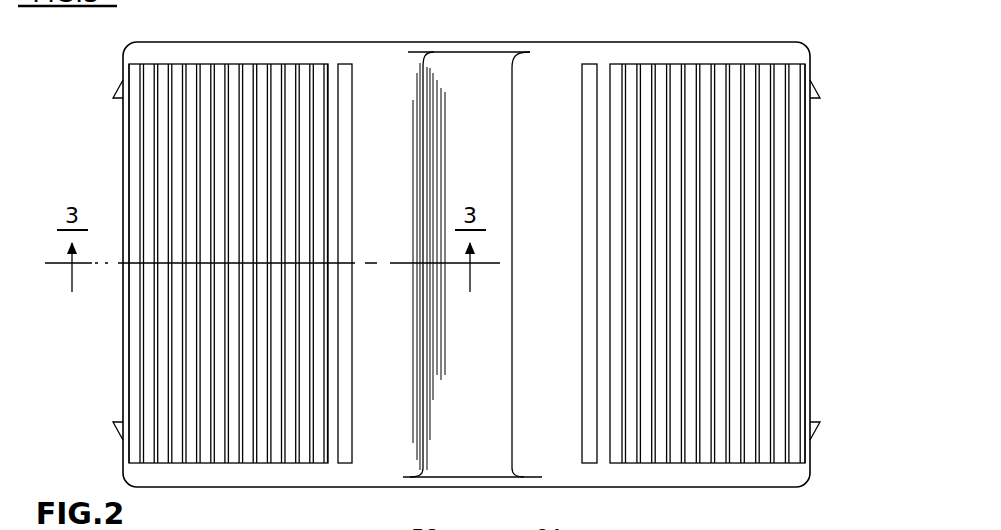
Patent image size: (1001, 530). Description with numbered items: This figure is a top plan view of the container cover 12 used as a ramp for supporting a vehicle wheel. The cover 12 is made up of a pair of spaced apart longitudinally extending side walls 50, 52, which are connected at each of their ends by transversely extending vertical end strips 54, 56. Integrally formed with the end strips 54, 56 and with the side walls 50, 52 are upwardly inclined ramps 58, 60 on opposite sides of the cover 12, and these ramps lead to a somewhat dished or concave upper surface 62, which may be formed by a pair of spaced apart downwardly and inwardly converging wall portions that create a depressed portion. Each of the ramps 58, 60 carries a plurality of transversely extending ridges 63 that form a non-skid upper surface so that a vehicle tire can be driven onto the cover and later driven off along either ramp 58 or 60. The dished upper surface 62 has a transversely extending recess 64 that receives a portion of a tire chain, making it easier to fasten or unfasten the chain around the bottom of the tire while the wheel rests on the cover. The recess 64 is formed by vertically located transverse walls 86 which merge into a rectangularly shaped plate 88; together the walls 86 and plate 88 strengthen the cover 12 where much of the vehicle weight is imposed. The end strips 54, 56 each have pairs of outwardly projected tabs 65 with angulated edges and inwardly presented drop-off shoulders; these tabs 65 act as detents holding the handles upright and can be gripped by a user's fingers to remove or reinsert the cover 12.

The container cover 12 is at (833, 129).
The side wall 50 is at (487, 42).
The side wall 52 is at (322, 478).
The end strip 54 is at (125, 365).
The end strip 56 is at (810, 150).
The ramp 58 is at (199, 165).
The ramp 60 is at (753, 218).
The dished upper surface 62 is at (552, 130).
The transversely extending ridges 63 is at (165, 350).
The transversely extending recess 64 is at (461, 107).
The outwardly projected tabs 65 is at (113, 92).
The transverse walls 86 is at (423, 322).
The rectangularly shaped plate 88 is at (493, 168).